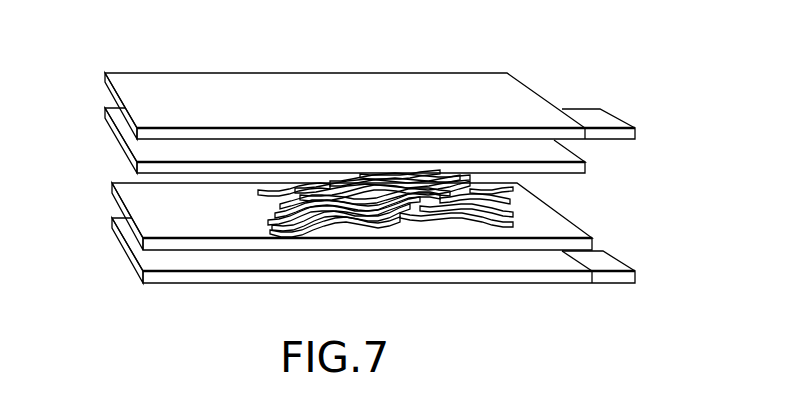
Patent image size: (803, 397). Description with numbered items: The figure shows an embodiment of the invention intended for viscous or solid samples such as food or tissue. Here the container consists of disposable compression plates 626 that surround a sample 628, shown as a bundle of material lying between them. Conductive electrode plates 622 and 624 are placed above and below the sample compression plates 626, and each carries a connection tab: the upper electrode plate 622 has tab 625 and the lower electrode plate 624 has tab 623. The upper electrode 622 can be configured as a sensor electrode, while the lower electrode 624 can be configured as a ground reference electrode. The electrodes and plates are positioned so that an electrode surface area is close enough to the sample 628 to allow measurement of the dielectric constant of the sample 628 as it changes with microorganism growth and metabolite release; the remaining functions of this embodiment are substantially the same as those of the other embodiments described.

The electrode plate 622 is at (110, 90).
The tab 625 is at (592, 118).
The compression plates 626 is at (120, 207).
The sample 628 is at (417, 207).
The electrode plate 624 is at (178, 277).
The tab 623 is at (608, 267).